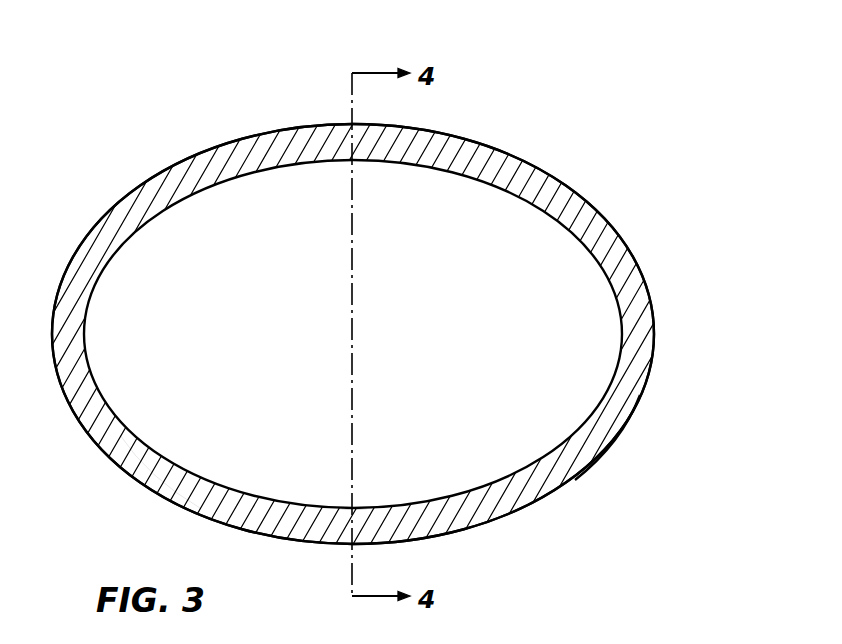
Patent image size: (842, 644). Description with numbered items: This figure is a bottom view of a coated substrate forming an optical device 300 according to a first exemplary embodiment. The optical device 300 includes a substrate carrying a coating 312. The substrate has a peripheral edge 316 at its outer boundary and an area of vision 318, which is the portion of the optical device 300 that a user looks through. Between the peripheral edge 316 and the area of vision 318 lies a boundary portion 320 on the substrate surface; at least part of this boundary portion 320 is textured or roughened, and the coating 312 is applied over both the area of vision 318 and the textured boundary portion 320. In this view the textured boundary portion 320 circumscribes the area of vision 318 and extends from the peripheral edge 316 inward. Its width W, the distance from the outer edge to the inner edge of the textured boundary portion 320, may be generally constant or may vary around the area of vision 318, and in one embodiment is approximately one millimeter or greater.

The optical device 300 is at (544, 120).
The coating 312 is at (585, 278).
The peripheral edge 316 is at (635, 407).
The area of vision 318 is at (197, 210).
The boundary portion 320 is at (599, 432).
The width W is at (115, 515).